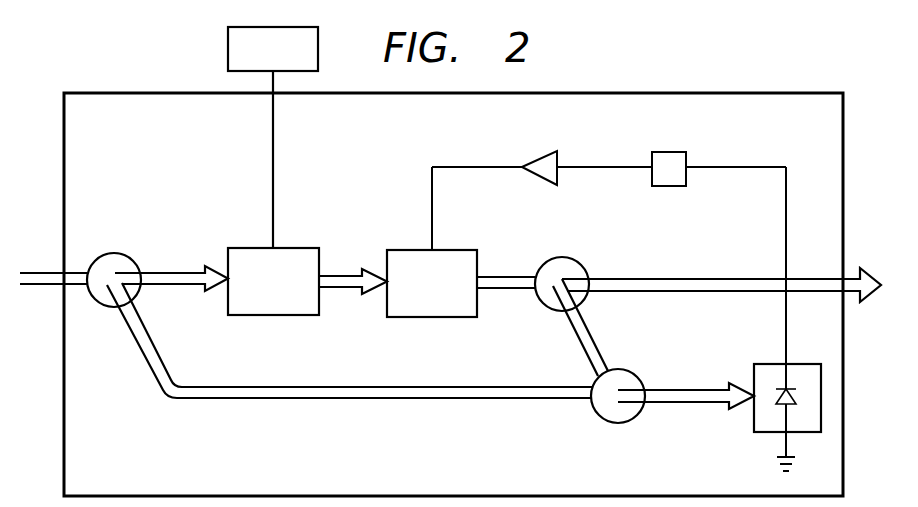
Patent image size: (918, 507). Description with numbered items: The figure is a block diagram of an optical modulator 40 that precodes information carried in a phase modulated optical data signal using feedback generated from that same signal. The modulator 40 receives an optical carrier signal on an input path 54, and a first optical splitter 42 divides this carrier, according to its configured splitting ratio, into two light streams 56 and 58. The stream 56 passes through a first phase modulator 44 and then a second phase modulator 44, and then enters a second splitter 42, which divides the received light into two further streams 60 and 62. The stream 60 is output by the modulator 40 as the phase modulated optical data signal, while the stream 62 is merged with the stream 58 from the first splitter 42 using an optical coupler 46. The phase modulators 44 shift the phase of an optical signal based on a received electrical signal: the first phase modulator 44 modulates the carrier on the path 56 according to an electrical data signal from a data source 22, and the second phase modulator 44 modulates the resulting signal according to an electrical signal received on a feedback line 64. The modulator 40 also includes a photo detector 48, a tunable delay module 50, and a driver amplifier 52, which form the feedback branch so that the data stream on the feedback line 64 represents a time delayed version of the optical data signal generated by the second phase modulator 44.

The data source 22 is at (228, 44).
The optical modulator 40 is at (184, 164).
The optical splitter 42 is at (114, 256).
The phase modulator 44 is at (262, 316).
The optical coupler 46 is at (622, 424).
The photo detector 48 is at (764, 364).
The tunable delay module 50 is at (676, 152).
The driver amplifier 52 is at (540, 156).
The path 54 is at (42, 280).
The stream 56 is at (180, 276).
The stream 58 is at (372, 400).
The stream 60 is at (682, 279).
The stream 62 is at (577, 336).
The feedback line 64 is at (432, 208).